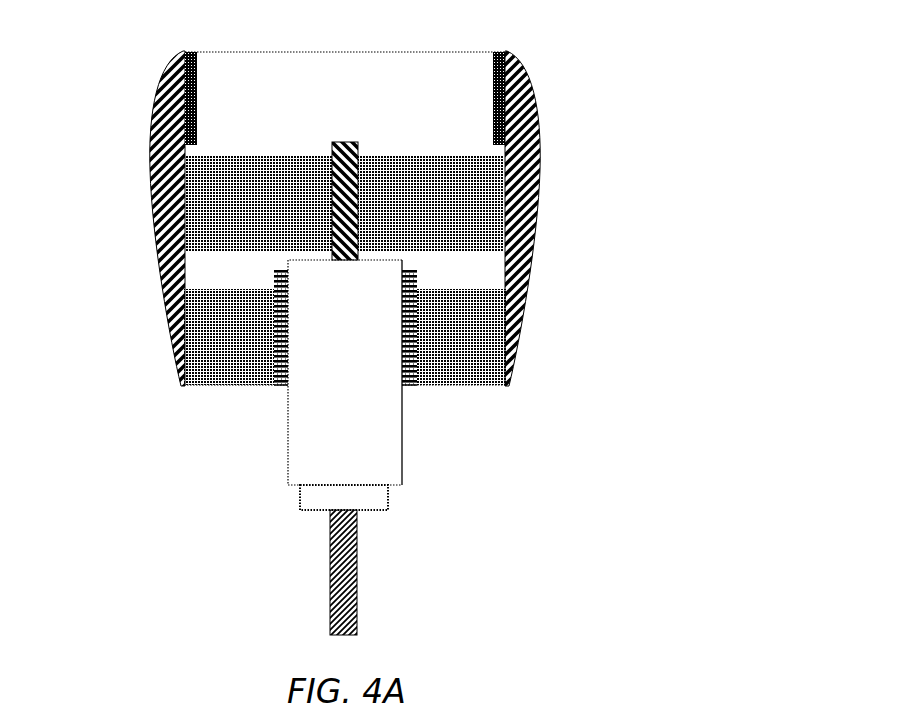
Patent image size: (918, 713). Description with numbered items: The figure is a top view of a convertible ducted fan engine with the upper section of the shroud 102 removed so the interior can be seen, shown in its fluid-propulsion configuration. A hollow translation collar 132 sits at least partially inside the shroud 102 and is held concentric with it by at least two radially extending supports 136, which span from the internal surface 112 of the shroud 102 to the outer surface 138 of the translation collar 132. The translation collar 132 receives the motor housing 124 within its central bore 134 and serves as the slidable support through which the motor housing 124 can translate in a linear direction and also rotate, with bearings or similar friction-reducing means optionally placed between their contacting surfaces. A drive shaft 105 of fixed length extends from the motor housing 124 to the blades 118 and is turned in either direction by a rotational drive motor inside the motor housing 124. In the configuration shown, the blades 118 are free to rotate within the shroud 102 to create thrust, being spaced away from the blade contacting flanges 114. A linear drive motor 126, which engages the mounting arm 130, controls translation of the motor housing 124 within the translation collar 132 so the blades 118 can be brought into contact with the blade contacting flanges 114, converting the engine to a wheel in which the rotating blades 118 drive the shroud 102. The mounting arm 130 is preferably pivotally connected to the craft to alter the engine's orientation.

The shroud 102 is at (336, 219).
The drive shaft 105 is at (360, 153).
The internal surface 112 is at (182, 340).
The blade contacting flanges 114 is at (491, 78).
The blades 118 is at (263, 180).
The motor housing 124 is at (297, 457).
The linear drive motor 126 is at (388, 497).
The mounting arm 130 is at (357, 573).
The translation collar 132 is at (280, 385).
The central bore 134 is at (420, 383).
The radially extending supports 136 is at (182, 387).
The outer surface 138 is at (273, 337).